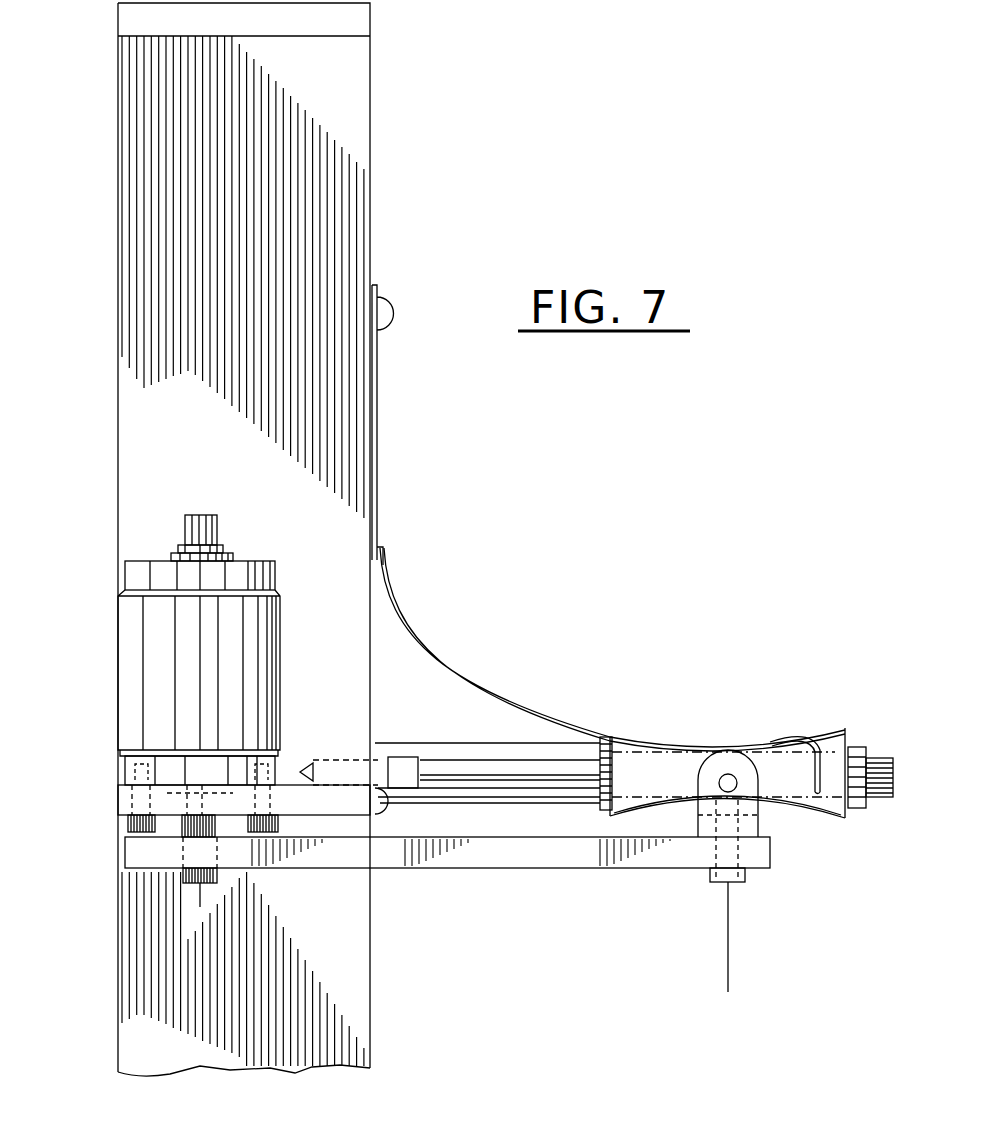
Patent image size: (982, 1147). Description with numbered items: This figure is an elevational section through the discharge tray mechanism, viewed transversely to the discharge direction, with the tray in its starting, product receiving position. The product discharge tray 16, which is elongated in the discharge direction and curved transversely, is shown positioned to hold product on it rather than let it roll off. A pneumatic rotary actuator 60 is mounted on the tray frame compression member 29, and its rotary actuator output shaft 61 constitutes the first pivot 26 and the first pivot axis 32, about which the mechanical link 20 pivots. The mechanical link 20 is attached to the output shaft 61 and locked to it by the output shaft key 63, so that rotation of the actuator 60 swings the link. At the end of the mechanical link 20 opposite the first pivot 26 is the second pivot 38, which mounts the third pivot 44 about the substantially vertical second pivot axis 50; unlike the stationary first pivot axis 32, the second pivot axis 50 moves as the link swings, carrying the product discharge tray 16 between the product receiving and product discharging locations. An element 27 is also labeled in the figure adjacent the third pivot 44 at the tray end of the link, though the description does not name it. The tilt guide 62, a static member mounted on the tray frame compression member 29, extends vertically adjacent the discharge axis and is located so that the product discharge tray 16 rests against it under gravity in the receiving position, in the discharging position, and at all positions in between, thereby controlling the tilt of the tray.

The product discharge tray 16 is at (505, 689).
The mechanical link 20 is at (498, 852).
The first pivot 26 is at (187, 875).
The roller 27 is at (828, 802).
The tray frame compression member 29 is at (289, 790).
The first pivot axis 32 is at (198, 897).
The second pivot 38 is at (730, 875).
The third pivot 44 is at (724, 774).
The second pivot axis 50 is at (728, 965).
The pneumatic rotary actuator 60 is at (157, 650).
The rotary actuator output shaft 61 is at (202, 828).
The tilt guide 62 is at (377, 438).
The output shaft key 63 is at (183, 831).